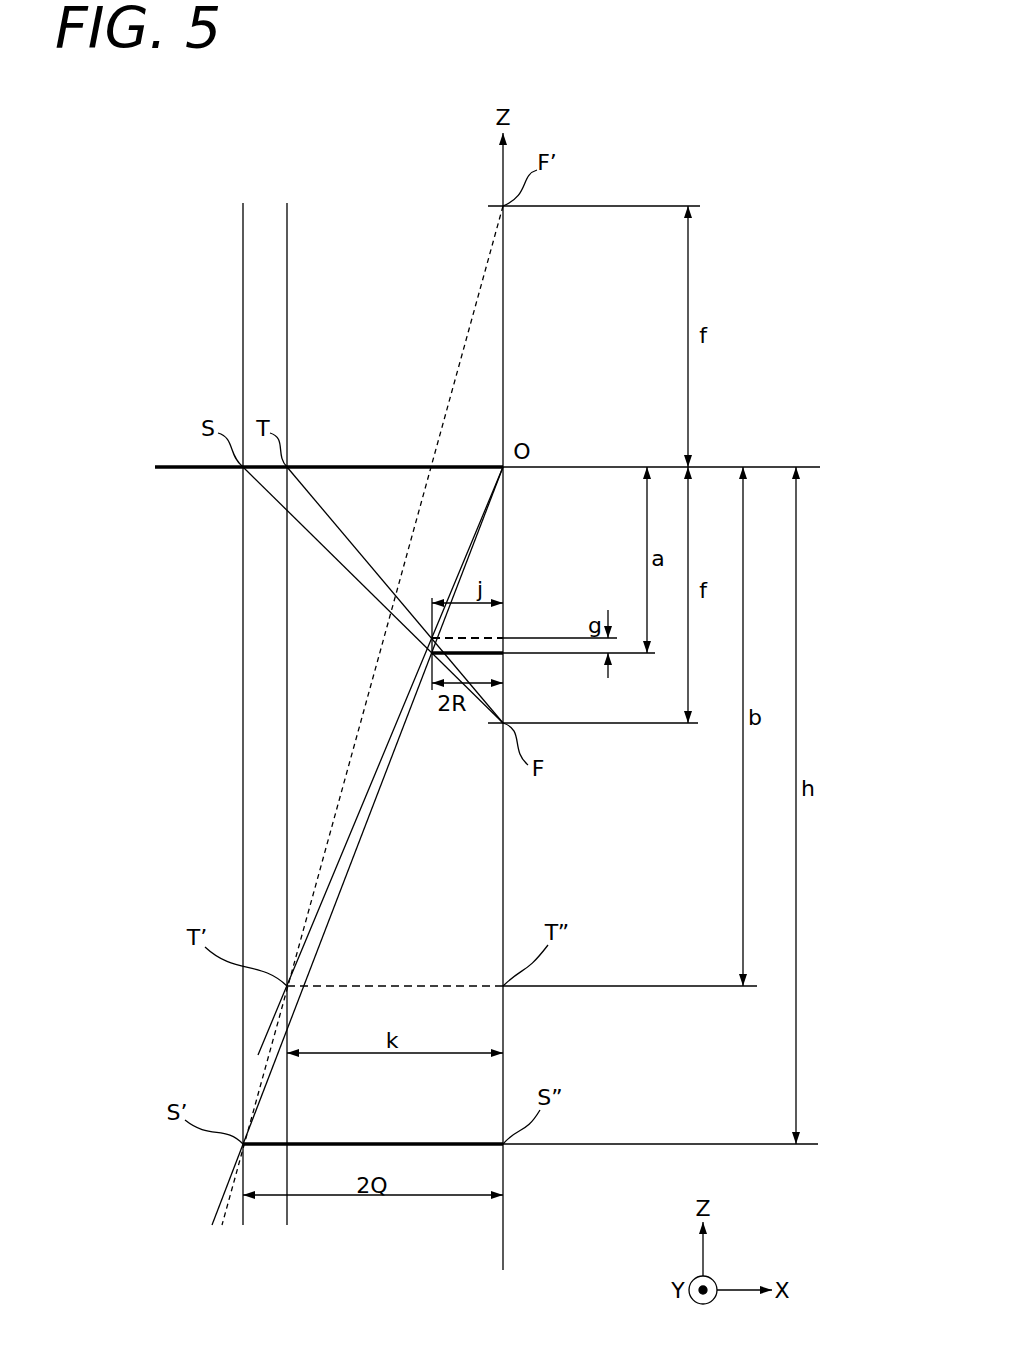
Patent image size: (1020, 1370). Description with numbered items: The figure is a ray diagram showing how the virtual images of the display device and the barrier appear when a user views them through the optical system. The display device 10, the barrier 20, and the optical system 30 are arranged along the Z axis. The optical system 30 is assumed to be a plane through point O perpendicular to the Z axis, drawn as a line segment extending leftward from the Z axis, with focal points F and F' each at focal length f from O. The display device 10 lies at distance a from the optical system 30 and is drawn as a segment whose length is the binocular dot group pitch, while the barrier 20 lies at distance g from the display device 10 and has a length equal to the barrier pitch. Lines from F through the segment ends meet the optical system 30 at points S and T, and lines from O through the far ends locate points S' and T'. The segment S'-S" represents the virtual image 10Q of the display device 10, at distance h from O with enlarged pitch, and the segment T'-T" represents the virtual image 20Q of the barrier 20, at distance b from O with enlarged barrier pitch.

The display device 10 is at (478, 654).
The barrier 20 is at (480, 635).
The optical system 30 is at (365, 467).
The virtual image from the display device 10Q is at (393, 1144).
The virtual image from the barrier 20Q is at (400, 986).